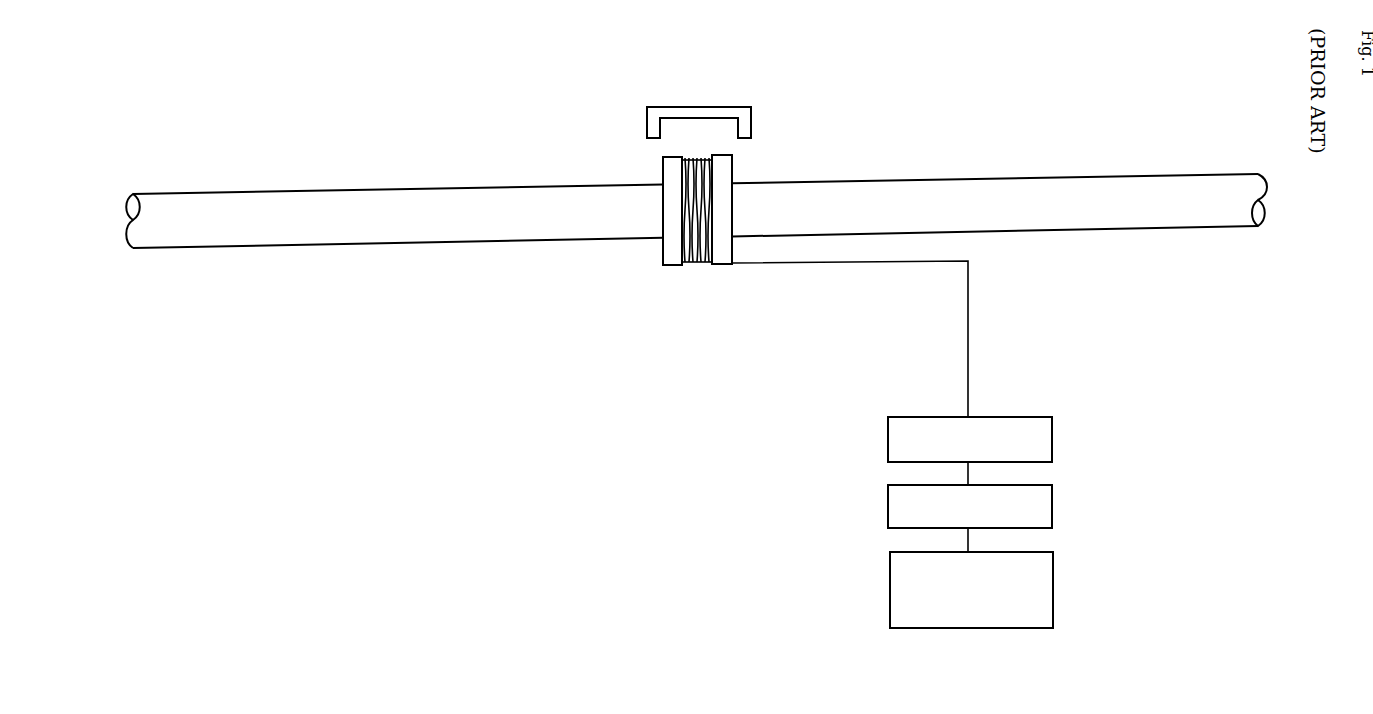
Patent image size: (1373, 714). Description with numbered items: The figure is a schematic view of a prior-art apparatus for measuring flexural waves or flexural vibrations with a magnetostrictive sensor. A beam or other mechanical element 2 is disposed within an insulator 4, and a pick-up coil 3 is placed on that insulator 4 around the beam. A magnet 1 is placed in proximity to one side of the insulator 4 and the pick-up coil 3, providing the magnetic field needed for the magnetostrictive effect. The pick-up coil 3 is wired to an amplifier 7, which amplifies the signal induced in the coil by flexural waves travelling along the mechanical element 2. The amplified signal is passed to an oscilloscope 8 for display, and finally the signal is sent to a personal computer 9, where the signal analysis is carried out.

The magnet 1 is at (683, 105).
The beam or other mechanical element 2 is at (481, 240).
The pick-up coil 3 is at (692, 265).
The insulator 4 is at (672, 265).
The amplifier 7 is at (1053, 442).
The oscilloscope 8 is at (1053, 507).
The personal computer 9 is at (1053, 587).